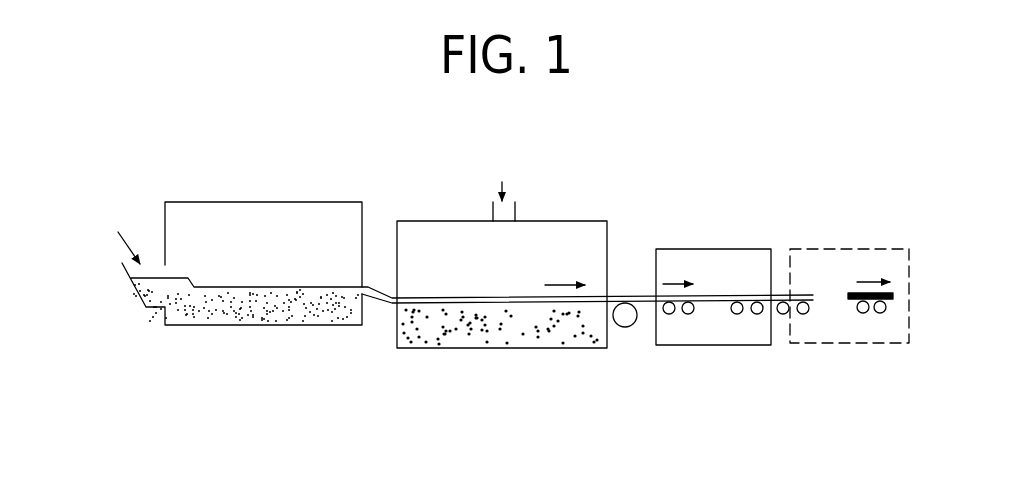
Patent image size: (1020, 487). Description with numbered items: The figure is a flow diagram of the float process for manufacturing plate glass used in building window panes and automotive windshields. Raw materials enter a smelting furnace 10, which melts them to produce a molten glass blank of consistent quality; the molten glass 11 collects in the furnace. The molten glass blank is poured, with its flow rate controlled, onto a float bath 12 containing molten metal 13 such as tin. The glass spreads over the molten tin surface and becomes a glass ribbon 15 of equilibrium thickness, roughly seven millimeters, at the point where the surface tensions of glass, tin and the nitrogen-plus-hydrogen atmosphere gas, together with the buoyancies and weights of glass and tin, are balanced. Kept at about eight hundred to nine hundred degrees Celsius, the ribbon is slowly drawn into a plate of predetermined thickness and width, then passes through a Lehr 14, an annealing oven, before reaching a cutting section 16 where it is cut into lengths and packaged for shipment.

The smelting furnace 10 is at (245, 202).
The molten glass 11 is at (192, 315).
The float bath 12 is at (440, 221).
The molten metal 13 is at (438, 340).
The Lehr 14 is at (665, 249).
The glass ribbon 15 is at (442, 297).
The cutting section 16 is at (823, 249).